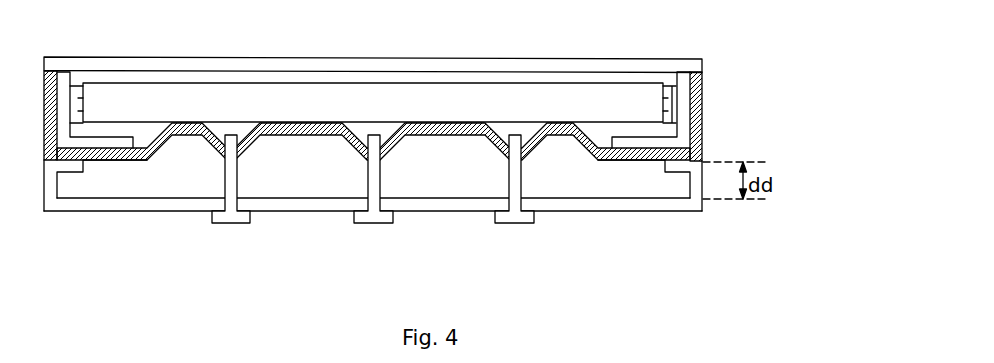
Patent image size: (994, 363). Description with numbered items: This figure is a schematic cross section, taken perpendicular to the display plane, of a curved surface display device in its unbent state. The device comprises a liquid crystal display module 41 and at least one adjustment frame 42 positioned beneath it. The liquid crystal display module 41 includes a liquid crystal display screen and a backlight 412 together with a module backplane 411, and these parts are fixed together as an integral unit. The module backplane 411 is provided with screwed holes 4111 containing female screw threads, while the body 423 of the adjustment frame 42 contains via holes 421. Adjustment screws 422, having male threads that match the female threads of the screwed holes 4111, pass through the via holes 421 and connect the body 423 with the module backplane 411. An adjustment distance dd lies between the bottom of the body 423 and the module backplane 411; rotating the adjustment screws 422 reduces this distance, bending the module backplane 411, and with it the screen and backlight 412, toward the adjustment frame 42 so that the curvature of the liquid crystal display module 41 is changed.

The liquid crystal display module 41 is at (488, 151).
The module backplane 411 is at (444, 116).
The screwed hole 4111 is at (367, 162).
The backlight 412 is at (444, 36).
The adjustment frame 42 is at (444, 218).
The via hole 421 is at (444, 200).
The adjustment screw 422 is at (428, 237).
The body 423 is at (422, 211).